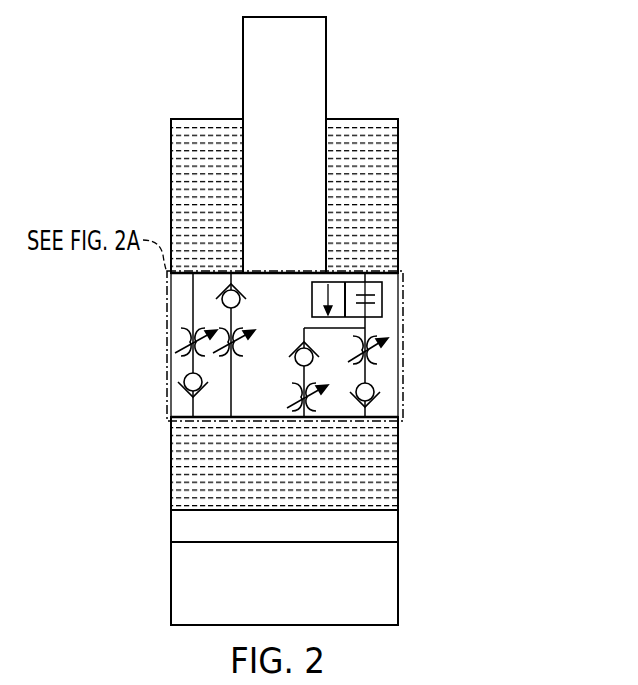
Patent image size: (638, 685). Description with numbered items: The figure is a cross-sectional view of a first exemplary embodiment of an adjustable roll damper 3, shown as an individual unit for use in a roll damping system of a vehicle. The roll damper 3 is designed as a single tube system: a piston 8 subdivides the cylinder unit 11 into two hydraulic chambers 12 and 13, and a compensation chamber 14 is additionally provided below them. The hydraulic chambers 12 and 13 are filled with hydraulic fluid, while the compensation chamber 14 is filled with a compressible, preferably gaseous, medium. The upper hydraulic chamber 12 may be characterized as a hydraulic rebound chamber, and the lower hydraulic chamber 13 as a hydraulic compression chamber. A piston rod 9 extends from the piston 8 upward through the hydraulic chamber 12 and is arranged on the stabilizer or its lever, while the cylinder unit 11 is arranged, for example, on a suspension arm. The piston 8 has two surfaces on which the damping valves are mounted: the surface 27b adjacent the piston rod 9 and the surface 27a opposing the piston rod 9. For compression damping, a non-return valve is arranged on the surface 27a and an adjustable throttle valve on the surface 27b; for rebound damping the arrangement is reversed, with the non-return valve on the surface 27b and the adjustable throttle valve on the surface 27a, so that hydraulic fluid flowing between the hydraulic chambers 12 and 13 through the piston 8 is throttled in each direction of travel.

The adjustable roll damper 3 is at (256, 145).
The piston rod 9 is at (315, 42).
The hydraulic chamber 12 is at (390, 178).
The piston 8 is at (302, 343).
The surface of the piston opposing the piston rod 27a is at (272, 417).
The surface of the piston adjacent the piston rod 27b is at (265, 273).
The cylinder unit 11 is at (253, 521).
The hydraulic chamber 13 is at (390, 463).
The compensation chamber 14 is at (390, 578).